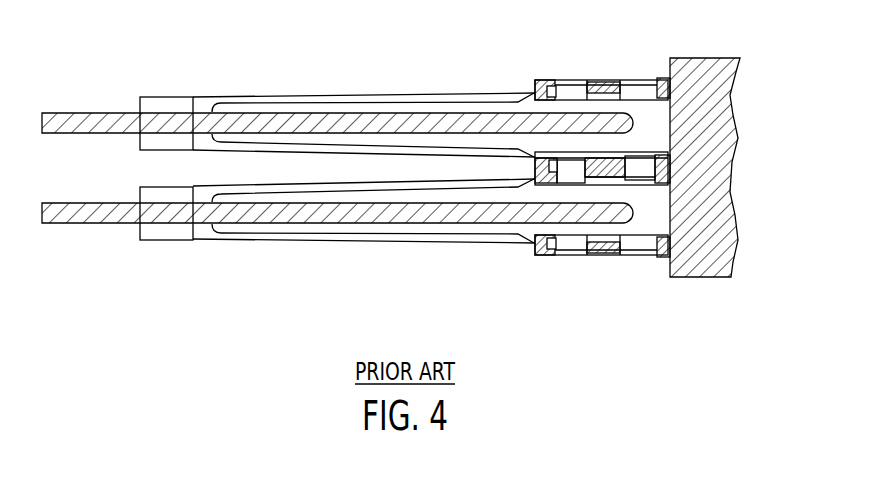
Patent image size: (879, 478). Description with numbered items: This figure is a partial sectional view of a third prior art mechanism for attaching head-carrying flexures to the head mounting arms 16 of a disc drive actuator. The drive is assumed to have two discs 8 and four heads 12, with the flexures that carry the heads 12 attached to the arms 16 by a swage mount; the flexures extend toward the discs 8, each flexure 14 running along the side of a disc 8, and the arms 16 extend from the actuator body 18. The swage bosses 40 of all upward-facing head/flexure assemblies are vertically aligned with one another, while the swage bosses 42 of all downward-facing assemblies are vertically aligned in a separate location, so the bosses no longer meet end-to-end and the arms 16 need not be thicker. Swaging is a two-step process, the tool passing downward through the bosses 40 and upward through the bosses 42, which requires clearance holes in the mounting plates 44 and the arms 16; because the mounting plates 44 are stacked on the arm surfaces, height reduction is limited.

The disc 8 is at (65, 211).
The head 12 is at (163, 140).
The sleeve 14 is at (338, 145).
The head mounting arm 16 is at (536, 80).
The panel 18 is at (717, 58).
The swage boss 40 is at (655, 172).
The swage boss 42 is at (585, 158).
The mounting plate 44 is at (613, 158).